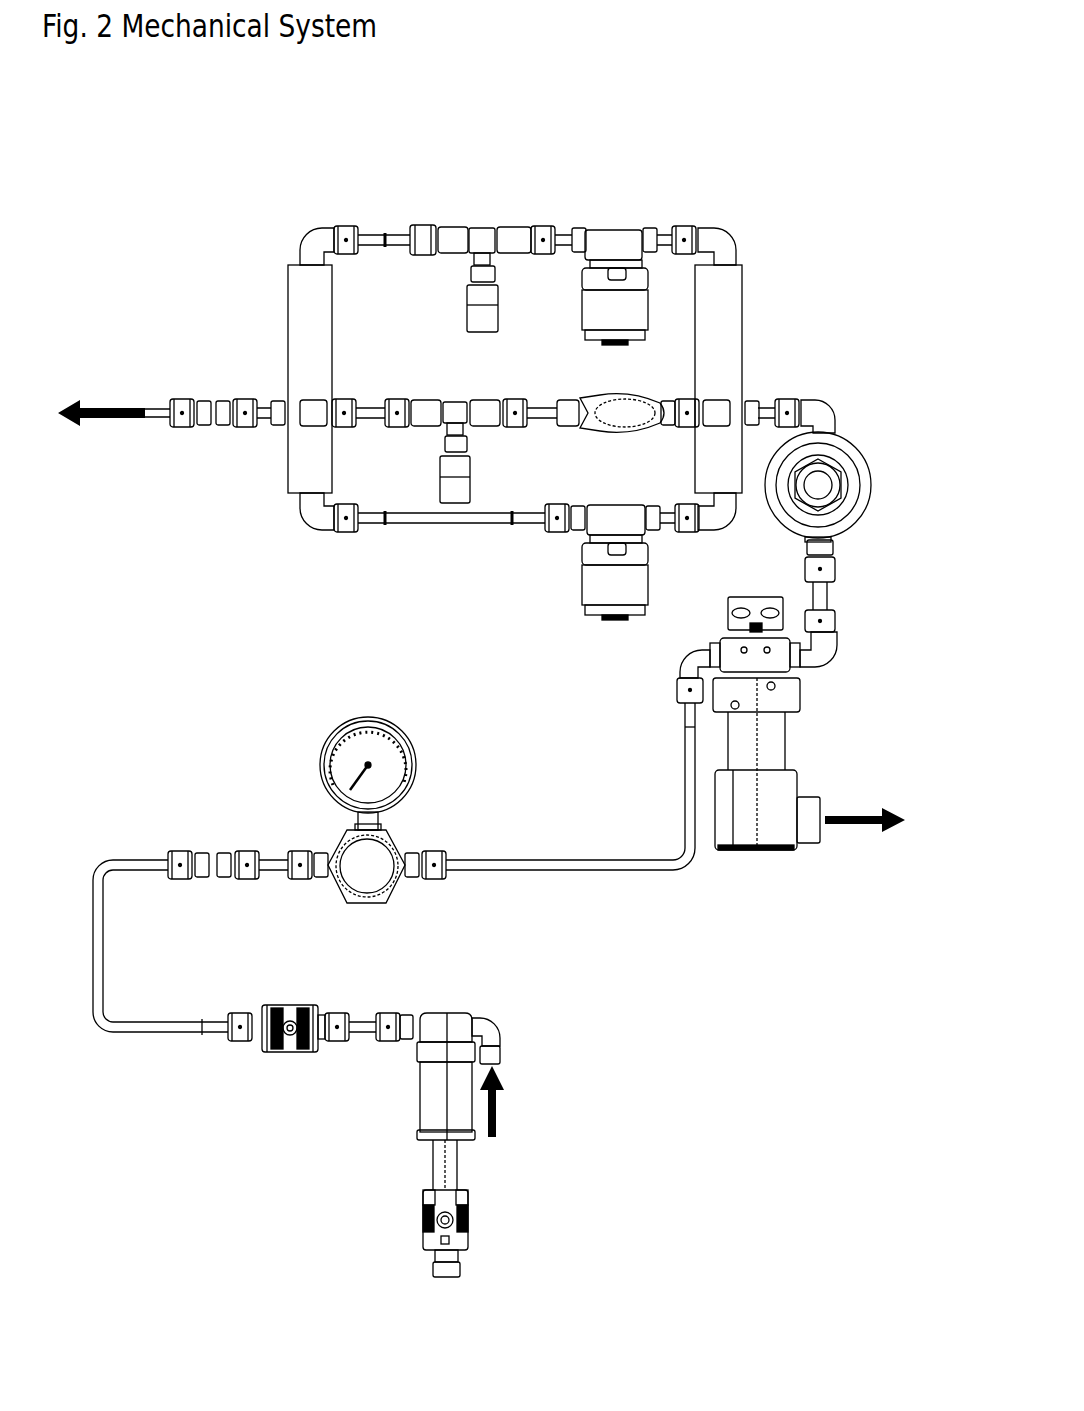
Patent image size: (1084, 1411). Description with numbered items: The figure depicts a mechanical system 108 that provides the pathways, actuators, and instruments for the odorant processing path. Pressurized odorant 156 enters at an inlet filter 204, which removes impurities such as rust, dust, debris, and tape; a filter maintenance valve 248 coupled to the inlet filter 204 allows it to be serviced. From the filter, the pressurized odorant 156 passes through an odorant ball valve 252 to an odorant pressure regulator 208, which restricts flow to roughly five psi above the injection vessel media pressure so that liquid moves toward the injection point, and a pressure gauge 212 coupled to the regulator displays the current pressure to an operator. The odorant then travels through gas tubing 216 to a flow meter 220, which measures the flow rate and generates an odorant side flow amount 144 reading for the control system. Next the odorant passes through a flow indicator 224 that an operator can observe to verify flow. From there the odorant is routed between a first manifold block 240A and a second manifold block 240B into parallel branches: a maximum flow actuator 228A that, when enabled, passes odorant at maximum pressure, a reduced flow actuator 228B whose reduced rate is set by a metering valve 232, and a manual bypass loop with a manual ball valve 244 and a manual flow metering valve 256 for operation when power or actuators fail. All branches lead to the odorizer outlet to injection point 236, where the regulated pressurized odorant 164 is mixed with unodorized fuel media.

The mechanical system 108 is at (877, 86).
The odorant side flow amount 144 is at (887, 846).
The pressurized odorant 156 is at (546, 1110).
The regulated pressurized odorant 164 is at (137, 440).
The inlet filter 204 is at (430, 1105).
The odorant pressure regulator 208 is at (362, 864).
The pressure gauge 212 is at (365, 770).
The gas tubing 216 is at (548, 872).
The flow meter 220 is at (768, 824).
The flow indicator 224 is at (820, 485).
The maximum flow actuator 228A is at (595, 580).
The reduced flow actuator 228B is at (615, 300).
The metering valve 232 is at (478, 228).
The odorizer outlet to injection point 236 is at (262, 405).
The manifold block 240A is at (320, 290).
The manifold block 240B is at (718, 290).
The manual ball valve 244 is at (600, 410).
The filter maintenance valve 248 is at (420, 1230).
The odorant ball valve 252 is at (305, 1000).
The manual flow metering valve 256 is at (455, 420).